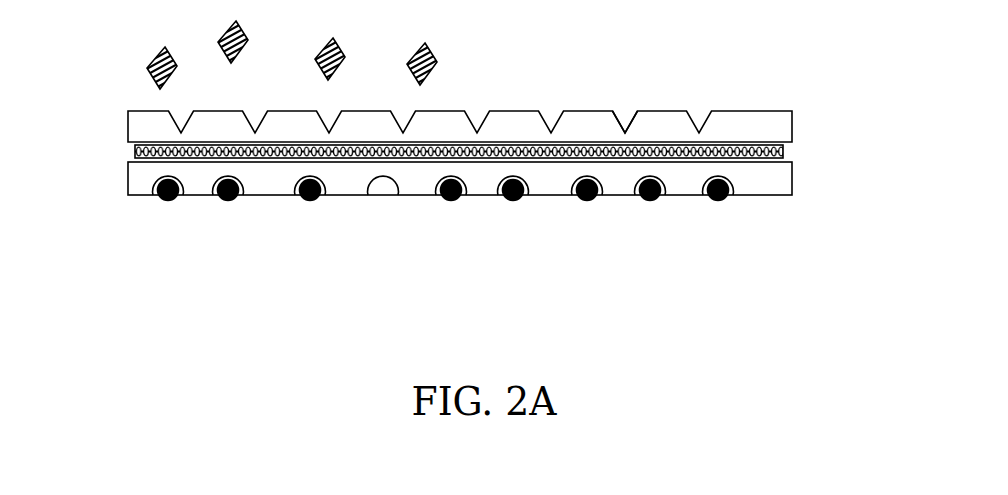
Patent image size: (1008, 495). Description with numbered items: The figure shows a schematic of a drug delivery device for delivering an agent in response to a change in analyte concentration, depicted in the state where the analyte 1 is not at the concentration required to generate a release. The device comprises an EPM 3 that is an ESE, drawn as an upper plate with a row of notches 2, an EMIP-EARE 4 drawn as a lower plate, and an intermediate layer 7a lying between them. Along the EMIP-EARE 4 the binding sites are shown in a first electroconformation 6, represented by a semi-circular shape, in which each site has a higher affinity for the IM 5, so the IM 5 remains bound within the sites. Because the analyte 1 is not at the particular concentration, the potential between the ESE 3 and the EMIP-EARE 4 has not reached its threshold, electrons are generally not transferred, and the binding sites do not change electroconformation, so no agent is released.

The analyte 1 is at (147, 58).
The V-shaped groove 2 is at (621, 109).
The electric potential producing member 3 is at (120, 127).
The EMIP-EARE 4 is at (116, 183).
The IM 5 is at (167, 207).
The first electroconformation 6 is at (382, 196).
The diffusion / intermediate layer 7a is at (797, 152).